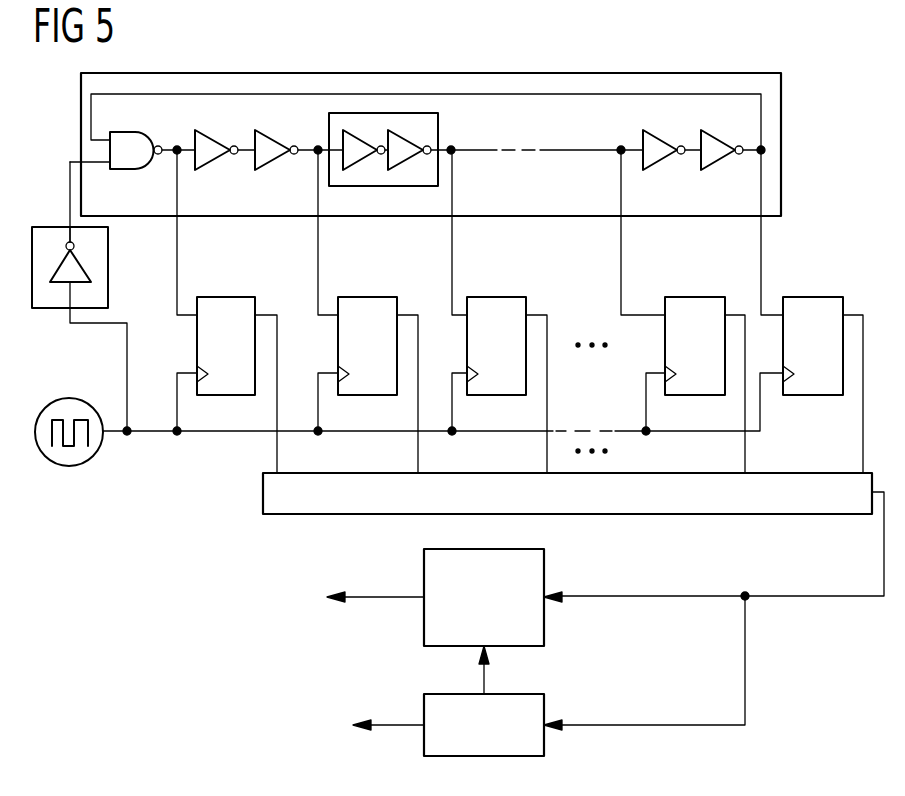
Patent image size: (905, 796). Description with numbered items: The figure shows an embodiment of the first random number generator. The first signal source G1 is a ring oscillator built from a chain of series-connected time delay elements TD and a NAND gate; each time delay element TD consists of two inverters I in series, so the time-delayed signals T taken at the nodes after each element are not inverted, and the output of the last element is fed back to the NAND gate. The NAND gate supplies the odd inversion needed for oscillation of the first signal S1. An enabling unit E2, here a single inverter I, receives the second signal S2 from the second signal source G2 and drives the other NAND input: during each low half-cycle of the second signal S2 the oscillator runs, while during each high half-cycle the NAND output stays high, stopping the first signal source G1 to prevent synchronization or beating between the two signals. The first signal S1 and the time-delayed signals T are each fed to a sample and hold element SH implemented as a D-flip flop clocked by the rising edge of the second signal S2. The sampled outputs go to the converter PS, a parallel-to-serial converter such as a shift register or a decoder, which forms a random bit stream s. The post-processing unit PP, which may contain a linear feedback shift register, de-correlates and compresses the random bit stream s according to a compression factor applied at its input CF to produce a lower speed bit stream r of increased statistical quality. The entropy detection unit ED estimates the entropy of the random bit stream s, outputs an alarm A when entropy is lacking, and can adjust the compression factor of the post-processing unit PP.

The first signal source G1 is at (781, 146).
The inverter I is at (208, 165).
The first signal S1 is at (165, 126).
The time-delayed signal T is at (307, 136).
The time delay element TD is at (438, 132).
The enabling unit E2 is at (108, 291).
The second signal source G2 is at (68, 398).
The second signal S2 is at (443, 421).
The sample and hold element SH is at (228, 297).
The converter PS is at (263, 490).
The random bit stream s is at (714, 611).
The post-processing unit PP is at (544, 618).
The lower speed bit stream r is at (374, 584).
The compression factor input CF is at (500, 670).
The entropy detection unit ED is at (544, 710).
The alarm A is at (388, 710).